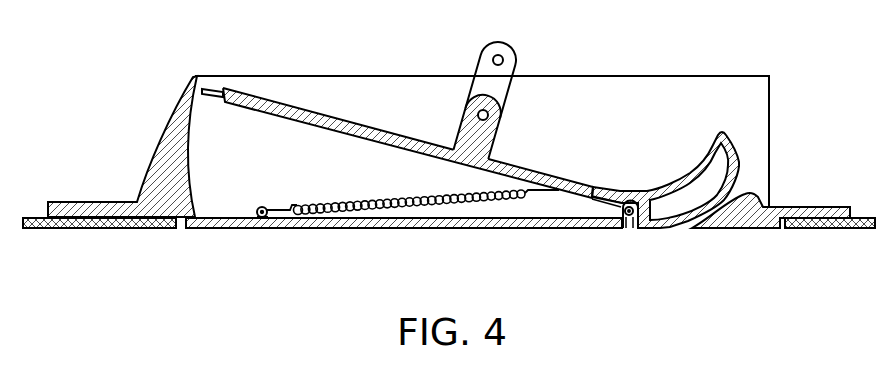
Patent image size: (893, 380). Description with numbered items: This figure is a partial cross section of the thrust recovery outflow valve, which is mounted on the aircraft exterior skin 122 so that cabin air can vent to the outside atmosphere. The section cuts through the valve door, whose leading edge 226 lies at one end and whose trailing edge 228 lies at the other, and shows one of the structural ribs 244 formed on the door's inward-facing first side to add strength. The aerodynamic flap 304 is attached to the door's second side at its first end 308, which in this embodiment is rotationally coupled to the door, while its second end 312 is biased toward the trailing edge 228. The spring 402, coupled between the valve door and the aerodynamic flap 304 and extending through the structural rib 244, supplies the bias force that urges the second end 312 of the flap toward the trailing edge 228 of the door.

The aircraft exterior skin 122 is at (100, 228).
The second end 312 is at (190, 228).
The aerodynamic flap 304 is at (278, 228).
The trailing edge 228 is at (221, 96).
The structural ribs 244 is at (545, 177).
The spring 402 is at (337, 197).
The first end 308 is at (628, 220).
The leading edge 226 is at (738, 172).